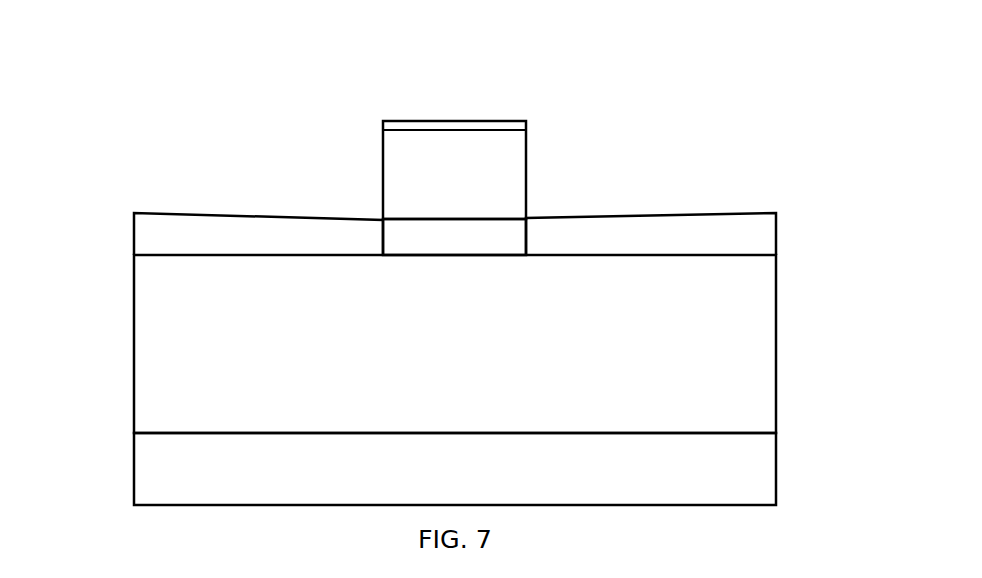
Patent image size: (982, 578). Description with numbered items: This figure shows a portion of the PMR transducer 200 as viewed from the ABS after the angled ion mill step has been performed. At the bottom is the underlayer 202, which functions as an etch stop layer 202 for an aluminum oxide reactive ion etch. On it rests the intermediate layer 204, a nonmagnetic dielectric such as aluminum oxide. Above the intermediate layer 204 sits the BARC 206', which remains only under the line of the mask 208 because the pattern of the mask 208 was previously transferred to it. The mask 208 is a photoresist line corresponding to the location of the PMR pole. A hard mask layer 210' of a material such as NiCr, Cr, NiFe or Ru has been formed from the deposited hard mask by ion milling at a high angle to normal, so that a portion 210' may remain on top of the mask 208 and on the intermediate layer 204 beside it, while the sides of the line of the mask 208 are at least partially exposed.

The PMR transducer 200 is at (477, 63).
The etch stop layer 202 is at (776, 472).
The intermediate layer 204 is at (134, 353).
The BARC 206' is at (388, 195).
The mask 208 is at (526, 183).
The hard mask layer 210' is at (454, 163).